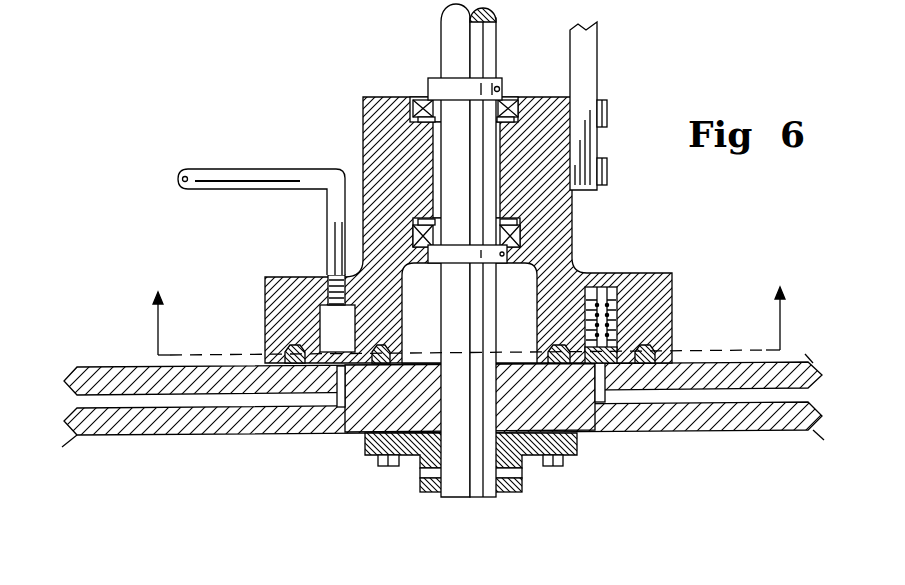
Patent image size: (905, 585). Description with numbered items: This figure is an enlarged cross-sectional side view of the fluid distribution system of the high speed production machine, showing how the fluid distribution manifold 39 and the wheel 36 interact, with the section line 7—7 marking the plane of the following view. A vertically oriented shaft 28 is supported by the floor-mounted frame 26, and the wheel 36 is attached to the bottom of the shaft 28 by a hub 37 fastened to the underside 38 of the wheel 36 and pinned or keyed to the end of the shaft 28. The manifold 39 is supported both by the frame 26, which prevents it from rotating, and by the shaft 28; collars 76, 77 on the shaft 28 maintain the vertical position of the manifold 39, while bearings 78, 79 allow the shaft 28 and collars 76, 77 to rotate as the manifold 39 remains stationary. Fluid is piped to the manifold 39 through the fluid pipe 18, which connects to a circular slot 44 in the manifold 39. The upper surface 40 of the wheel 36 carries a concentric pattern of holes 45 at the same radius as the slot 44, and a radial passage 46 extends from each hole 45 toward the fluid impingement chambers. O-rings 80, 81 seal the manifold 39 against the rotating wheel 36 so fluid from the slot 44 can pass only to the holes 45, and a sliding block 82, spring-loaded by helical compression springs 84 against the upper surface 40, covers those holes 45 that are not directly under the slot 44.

The section line 7— 7 is at (477, 316).
The fluid pipe 18 is at (332, 210).
The frame 26 is at (587, 83).
The shaft 28 is at (452, 25).
The wheel 36 is at (143, 420).
The hub 37 is at (431, 492).
The underside of wheel 38 is at (88, 437).
The fluid distribution manifold 39 is at (543, 97).
The upper surface of wheel 40 is at (88, 366).
The circular slot 44 is at (330, 323).
The holes 45 is at (340, 437).
The radial passage 46 is at (218, 400).
The collar 76 is at (438, 87).
The collar 77 is at (440, 257).
The bearing 78 is at (428, 107).
The bearing 79 is at (522, 234).
The O-ring 80 is at (648, 363).
The O-ring 81 is at (560, 466).
The sliding block 82 is at (602, 402).
The helical compression springs 84 is at (612, 313).